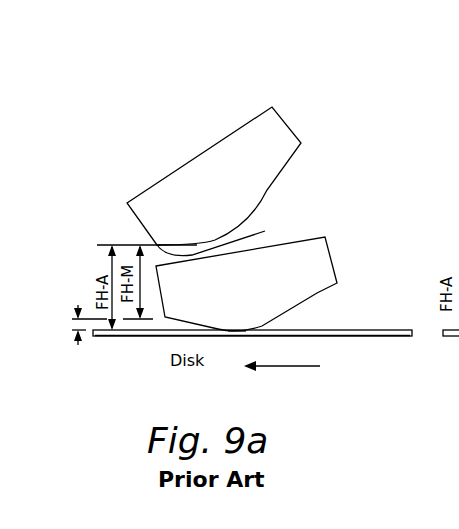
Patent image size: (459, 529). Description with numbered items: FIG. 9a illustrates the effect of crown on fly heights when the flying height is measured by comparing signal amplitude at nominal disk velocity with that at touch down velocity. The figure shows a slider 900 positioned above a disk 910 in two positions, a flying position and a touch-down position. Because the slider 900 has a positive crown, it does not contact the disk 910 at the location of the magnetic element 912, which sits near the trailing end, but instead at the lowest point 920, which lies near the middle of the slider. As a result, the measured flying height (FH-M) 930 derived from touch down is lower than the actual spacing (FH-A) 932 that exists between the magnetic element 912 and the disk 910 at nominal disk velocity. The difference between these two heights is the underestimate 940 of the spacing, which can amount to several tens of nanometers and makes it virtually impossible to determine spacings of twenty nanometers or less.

The slider 900 is at (322, 81).
The disk 910 is at (358, 330).
The element 912 is at (228, 237).
The lowest point 920 is at (237, 332).
The measured flying height (FH-M) 930 is at (132, 250).
The actual spacing (FH-A) 932 is at (105, 262).
The underestimate 940 is at (74, 340).